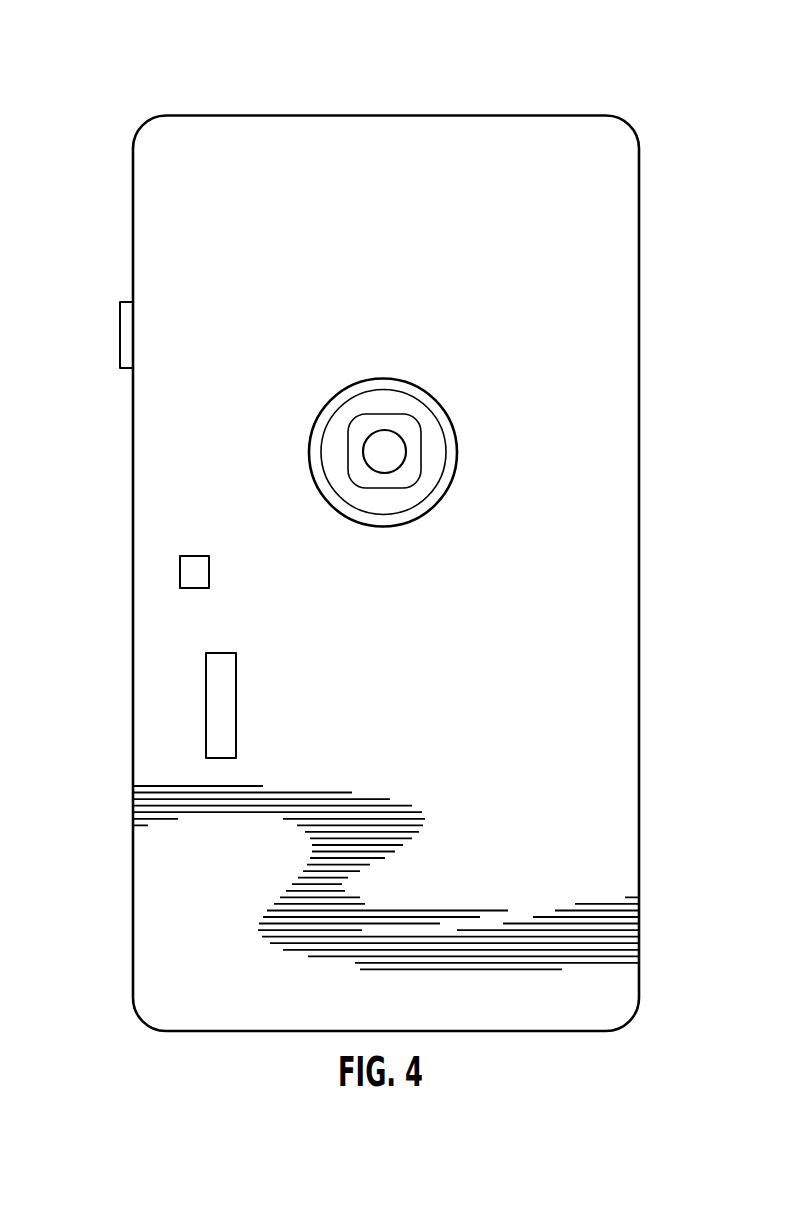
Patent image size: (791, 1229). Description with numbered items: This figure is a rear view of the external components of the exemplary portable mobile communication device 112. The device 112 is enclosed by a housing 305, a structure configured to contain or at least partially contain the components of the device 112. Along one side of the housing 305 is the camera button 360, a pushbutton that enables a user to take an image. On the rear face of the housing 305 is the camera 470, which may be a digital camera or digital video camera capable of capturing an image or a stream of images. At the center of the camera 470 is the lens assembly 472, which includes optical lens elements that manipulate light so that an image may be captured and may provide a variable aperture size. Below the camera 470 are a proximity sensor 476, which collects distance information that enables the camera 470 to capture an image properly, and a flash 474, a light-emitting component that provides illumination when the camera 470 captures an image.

The portable mobile communication device 112 is at (133, 80).
The housing 305 is at (615, 684).
The camera button 360 is at (119, 340).
The camera 470 is at (433, 477).
The lens assembly 472 is at (405, 447).
The flash 474 is at (206, 702).
The proximity sensor 476 is at (180, 575).